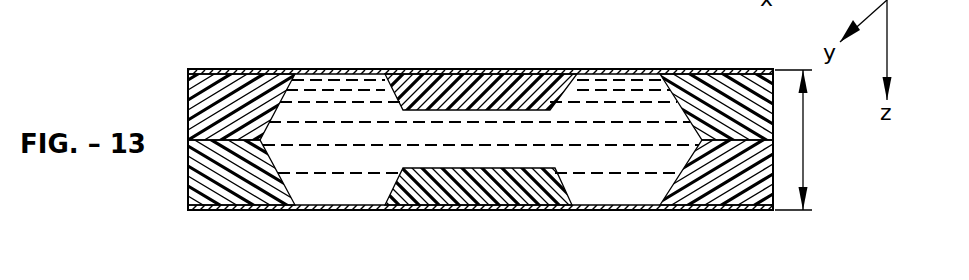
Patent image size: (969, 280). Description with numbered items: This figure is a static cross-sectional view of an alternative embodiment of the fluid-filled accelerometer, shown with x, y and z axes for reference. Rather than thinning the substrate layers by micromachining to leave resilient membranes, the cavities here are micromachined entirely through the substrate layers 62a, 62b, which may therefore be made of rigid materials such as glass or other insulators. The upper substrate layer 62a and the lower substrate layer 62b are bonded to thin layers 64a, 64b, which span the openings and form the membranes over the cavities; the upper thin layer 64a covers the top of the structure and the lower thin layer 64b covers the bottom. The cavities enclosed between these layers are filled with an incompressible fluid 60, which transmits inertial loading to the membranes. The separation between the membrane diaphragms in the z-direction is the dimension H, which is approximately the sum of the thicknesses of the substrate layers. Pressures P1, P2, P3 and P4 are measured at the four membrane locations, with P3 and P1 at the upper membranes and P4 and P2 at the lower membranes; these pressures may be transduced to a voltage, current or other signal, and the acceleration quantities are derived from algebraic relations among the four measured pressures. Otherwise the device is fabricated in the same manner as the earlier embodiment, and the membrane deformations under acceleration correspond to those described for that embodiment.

The incompressible fluid 60 is at (442, 140).
The substrate layer 62a is at (188, 102).
The substrate layer 62b is at (188, 172).
The thin layer 64a is at (253, 69).
The thin layer 64b is at (267, 211).
The measured pressure P1 is at (688, 105).
The measured pressure P2 is at (688, 173).
The measured pressure P3 is at (452, 140).
The measured pressure P4 is at (449, 140).
The separation between the membrane diaphragms H is at (794, 140).